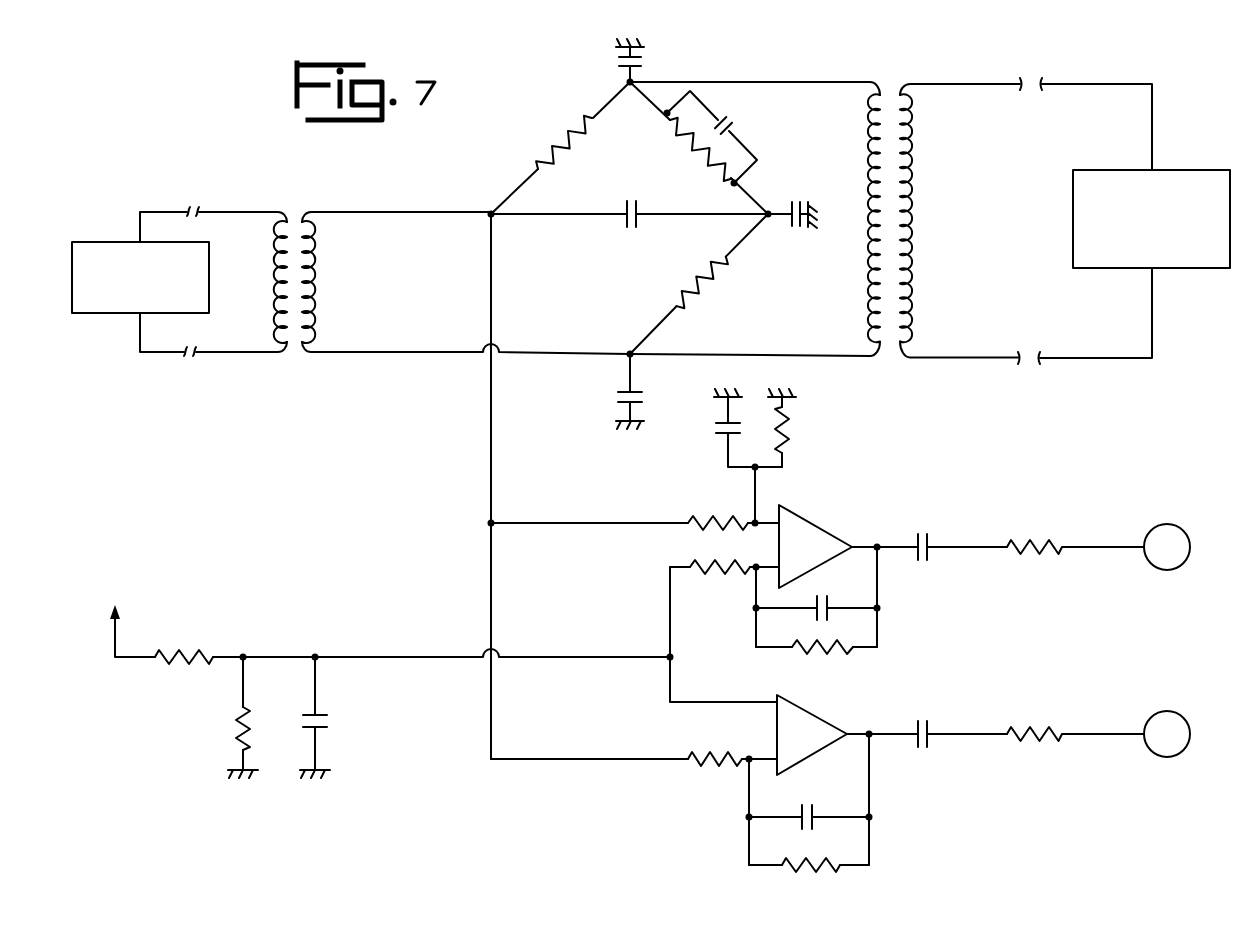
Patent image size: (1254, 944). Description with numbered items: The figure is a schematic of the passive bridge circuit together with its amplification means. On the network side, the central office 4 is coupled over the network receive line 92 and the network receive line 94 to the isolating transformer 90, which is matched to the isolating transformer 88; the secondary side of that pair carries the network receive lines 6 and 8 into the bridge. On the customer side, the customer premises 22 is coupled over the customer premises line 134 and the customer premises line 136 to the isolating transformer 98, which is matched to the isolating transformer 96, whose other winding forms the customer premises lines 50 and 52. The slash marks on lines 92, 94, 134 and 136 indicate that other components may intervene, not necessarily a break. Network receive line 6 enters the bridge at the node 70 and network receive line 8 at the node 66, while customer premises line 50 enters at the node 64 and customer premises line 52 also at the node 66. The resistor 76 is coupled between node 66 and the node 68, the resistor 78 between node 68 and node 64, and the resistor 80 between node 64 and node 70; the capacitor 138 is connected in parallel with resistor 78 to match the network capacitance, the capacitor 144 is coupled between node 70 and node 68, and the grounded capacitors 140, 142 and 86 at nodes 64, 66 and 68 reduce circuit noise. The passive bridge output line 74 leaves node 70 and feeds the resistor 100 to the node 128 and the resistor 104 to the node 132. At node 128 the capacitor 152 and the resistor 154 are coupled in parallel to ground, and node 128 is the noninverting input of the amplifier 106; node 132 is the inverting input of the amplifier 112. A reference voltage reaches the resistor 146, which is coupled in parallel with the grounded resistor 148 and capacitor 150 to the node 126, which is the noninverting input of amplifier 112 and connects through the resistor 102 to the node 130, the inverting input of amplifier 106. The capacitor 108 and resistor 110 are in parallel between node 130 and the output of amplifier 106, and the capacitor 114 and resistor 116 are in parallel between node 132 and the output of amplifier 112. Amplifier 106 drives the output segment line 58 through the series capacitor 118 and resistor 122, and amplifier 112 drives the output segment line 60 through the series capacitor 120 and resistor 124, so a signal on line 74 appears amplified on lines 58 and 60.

The central office 4 is at (110, 242).
The network receive line 6 is at (410, 212).
The network receive line 8 is at (390, 353).
The customer premises 22 is at (1073, 260).
The customer premises line 50 is at (790, 82).
The customer premises line 52 is at (847, 360).
The output segment line 58 is at (1168, 524).
The output segment line 60 is at (1170, 711).
The node 64 is at (638, 82).
The node 66 is at (630, 350).
The node 68 is at (770, 212).
The node 70 is at (490, 212).
The passive bridge output line 74 is at (491, 446).
The resistor 76 is at (700, 284).
The resistor 78 is at (700, 161).
The resistor 80 is at (560, 144).
The capacitor 86 is at (802, 228).
The isolating transformer 88 is at (315, 269).
The isolating transformer 90 is at (276, 270).
The network receive line 92 is at (215, 212).
The network receive line 94 is at (224, 352).
The isolating transformer 96 is at (866, 280).
The isolating transformer 98 is at (916, 230).
The resistor 100 is at (720, 519).
The resistor 102 is at (689, 566).
The resistor 104 is at (739, 756).
The amplifier 106 is at (810, 532).
The capacitor 108 is at (828, 606).
The resistor 110 is at (834, 656).
The amplifier 112 is at (814, 722).
The capacitor 114 is at (818, 812).
The resistor 116 is at (811, 868).
The capacitor 118 is at (922, 532).
The capacitor 120 is at (926, 722).
The resistor 122 is at (1050, 538).
The resistor 124 is at (1059, 742).
The node 126 is at (670, 658).
The node 128 is at (756, 522).
The node 130 is at (751, 573).
The node 132 is at (747, 766).
The customer premises line 134 is at (1080, 84).
The customer premises line 136 is at (1073, 358).
The capacitor 138 is at (728, 130).
The capacitor 140 is at (644, 62).
The capacitor 142 is at (617, 396).
The capacitor 144 is at (642, 212).
The resistor 146 is at (184, 648).
The resistor 148 is at (234, 726).
The capacitor 150 is at (328, 722).
The capacitor 152 is at (718, 432).
The resistor 154 is at (790, 434).